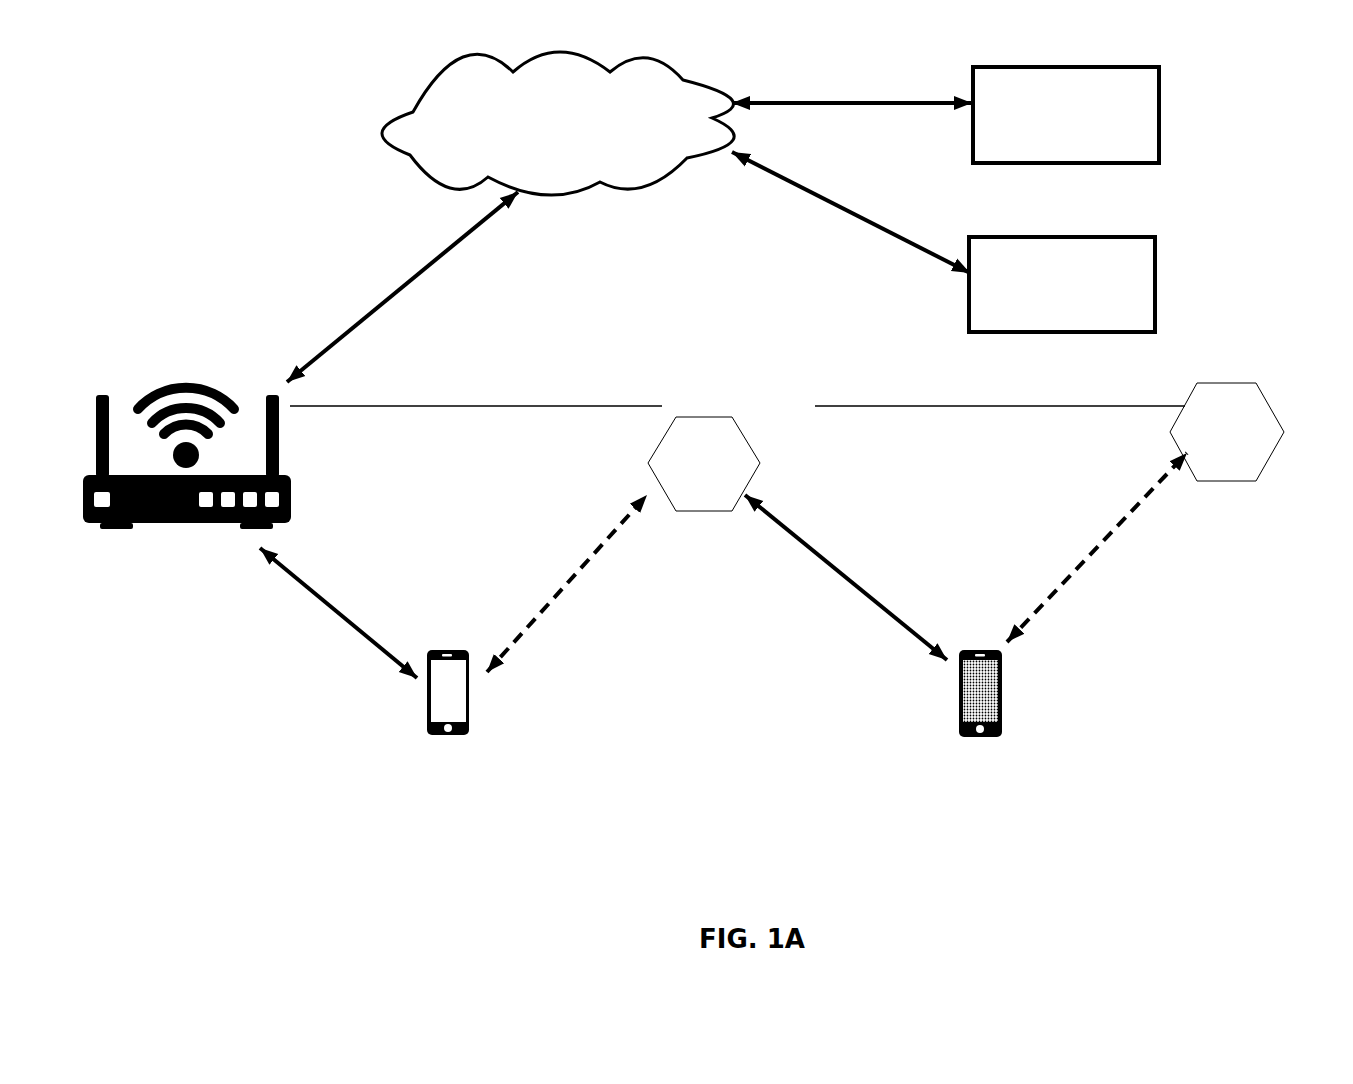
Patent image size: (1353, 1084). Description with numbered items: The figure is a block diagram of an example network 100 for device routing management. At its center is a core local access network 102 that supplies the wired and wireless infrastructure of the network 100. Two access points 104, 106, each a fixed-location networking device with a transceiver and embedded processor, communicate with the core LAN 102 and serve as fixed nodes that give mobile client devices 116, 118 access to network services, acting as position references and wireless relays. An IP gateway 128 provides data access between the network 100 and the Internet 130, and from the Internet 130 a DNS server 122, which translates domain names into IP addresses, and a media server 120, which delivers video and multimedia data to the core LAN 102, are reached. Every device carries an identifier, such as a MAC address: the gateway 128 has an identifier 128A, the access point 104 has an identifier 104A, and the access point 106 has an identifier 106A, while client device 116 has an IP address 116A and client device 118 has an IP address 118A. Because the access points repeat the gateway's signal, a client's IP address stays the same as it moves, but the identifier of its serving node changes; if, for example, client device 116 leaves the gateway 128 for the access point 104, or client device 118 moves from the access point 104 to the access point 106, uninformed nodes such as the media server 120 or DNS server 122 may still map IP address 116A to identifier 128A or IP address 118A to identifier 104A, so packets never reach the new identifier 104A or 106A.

The network 100 is at (283, 140).
The core local access network 102 is at (737, 408).
The access point 104 is at (692, 512).
The identifier 104A is at (807, 482).
The access point 106 is at (1240, 383).
The identifier 106A is at (1235, 527).
The client device 116 is at (473, 679).
The IP address 116A is at (310, 703).
The client device 118 is at (1008, 679).
The IP address 118A is at (850, 690).
The media server 120 is at (1043, 323).
The domain name server 122 is at (1045, 153).
The IP gateway 128 is at (210, 386).
The identifier 128A is at (203, 282).
The Internet 130 is at (538, 166).